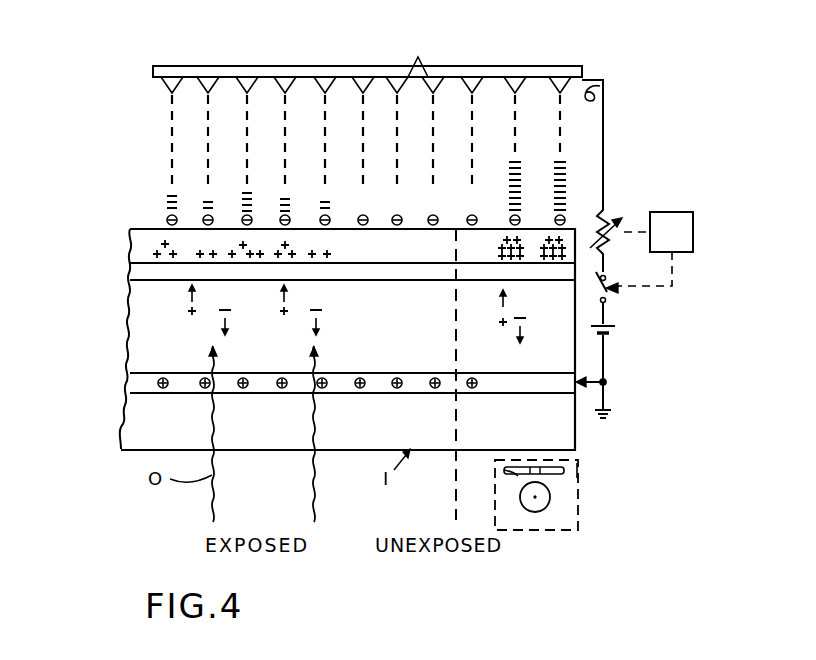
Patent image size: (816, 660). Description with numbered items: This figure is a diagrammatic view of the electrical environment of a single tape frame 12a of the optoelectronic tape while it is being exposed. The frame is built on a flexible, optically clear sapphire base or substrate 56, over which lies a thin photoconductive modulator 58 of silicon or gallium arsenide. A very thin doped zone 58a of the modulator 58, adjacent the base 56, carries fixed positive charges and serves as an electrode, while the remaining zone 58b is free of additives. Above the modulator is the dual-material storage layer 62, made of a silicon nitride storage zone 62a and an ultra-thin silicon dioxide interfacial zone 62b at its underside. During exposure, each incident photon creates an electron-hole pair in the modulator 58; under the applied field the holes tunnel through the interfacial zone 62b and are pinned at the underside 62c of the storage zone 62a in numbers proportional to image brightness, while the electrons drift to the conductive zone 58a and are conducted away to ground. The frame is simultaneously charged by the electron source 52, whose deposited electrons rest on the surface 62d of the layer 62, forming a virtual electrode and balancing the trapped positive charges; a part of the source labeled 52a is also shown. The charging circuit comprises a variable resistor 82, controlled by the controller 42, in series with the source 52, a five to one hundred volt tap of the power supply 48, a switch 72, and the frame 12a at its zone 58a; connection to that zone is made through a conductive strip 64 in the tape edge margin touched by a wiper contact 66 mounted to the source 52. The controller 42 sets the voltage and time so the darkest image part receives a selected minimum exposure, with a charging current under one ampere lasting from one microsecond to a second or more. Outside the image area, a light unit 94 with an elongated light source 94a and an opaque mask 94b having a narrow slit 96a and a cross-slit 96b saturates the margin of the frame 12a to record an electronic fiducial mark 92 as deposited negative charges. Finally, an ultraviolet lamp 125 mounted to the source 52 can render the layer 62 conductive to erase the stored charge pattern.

The tape frame 12a is at (620, 442).
The electron source 52 is at (336, 48).
The corona electrode 52a is at (431, 59).
The base or substrate 56 is at (145, 420).
The modulator 58 is at (96, 364).
The doped zone 58a is at (135, 383).
The remaining zone of modulator 58b is at (135, 323).
The dual-material storage layer 62 is at (102, 226).
The storage zone 62a is at (134, 240).
The interfacial zone 62b is at (134, 271).
The underside of storage zone 62c is at (393, 272).
The surface of storage layer 62d is at (137, 227).
The fiducial mark 92 is at (578, 168).
The U.V. lamp 125 is at (604, 82).
The variable resistor 82 is at (604, 224).
The controller 42 is at (649, 252).
The switch 72 is at (610, 296).
The power supply 48 is at (612, 335).
The conductive strip 64 is at (582, 378).
The wiper contact 66 is at (603, 400).
The light unit 94 is at (545, 544).
The light source 94a is at (552, 505).
The opaque mask 94b is at (515, 476).
The slit 96a is at (538, 467).
The cross-slit 96b is at (578, 473).